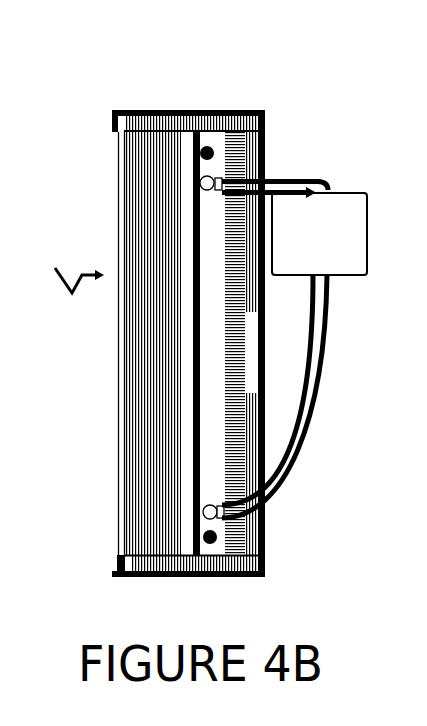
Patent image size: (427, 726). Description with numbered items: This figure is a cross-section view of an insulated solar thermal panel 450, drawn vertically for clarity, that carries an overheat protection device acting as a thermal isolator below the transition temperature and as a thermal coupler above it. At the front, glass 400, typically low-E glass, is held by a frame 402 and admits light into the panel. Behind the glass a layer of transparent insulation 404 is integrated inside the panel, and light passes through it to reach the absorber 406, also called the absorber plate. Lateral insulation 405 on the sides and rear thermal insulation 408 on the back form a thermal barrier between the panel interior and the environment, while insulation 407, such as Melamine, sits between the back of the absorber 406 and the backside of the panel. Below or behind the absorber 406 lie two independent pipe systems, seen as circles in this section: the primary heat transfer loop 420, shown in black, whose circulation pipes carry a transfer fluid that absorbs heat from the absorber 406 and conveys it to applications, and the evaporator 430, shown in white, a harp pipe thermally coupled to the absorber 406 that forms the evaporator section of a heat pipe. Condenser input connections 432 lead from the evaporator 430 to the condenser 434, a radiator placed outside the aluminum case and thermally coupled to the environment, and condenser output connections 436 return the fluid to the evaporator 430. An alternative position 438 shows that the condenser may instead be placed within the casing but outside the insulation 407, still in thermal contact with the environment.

The insulated solar thermal panel 450 is at (66, 50).
The frame 402 is at (110, 120).
The lateral insulation 405 is at (162, 112).
The glass 400 is at (125, 165).
The transparent insulation 404 is at (137, 215).
The absorber 406 is at (193, 278).
The insulation 407 is at (227, 343).
The rear thermal insulation 408 is at (225, 430).
The primary heat transfer loop 420 is at (207, 133).
The evaporator 430 is at (220, 165).
The condenser input connections 432 is at (298, 177).
The condenser 434 is at (319, 234).
The condenser output connections 436 is at (330, 315).
The condenser (alternative location) 438 is at (267, 357).